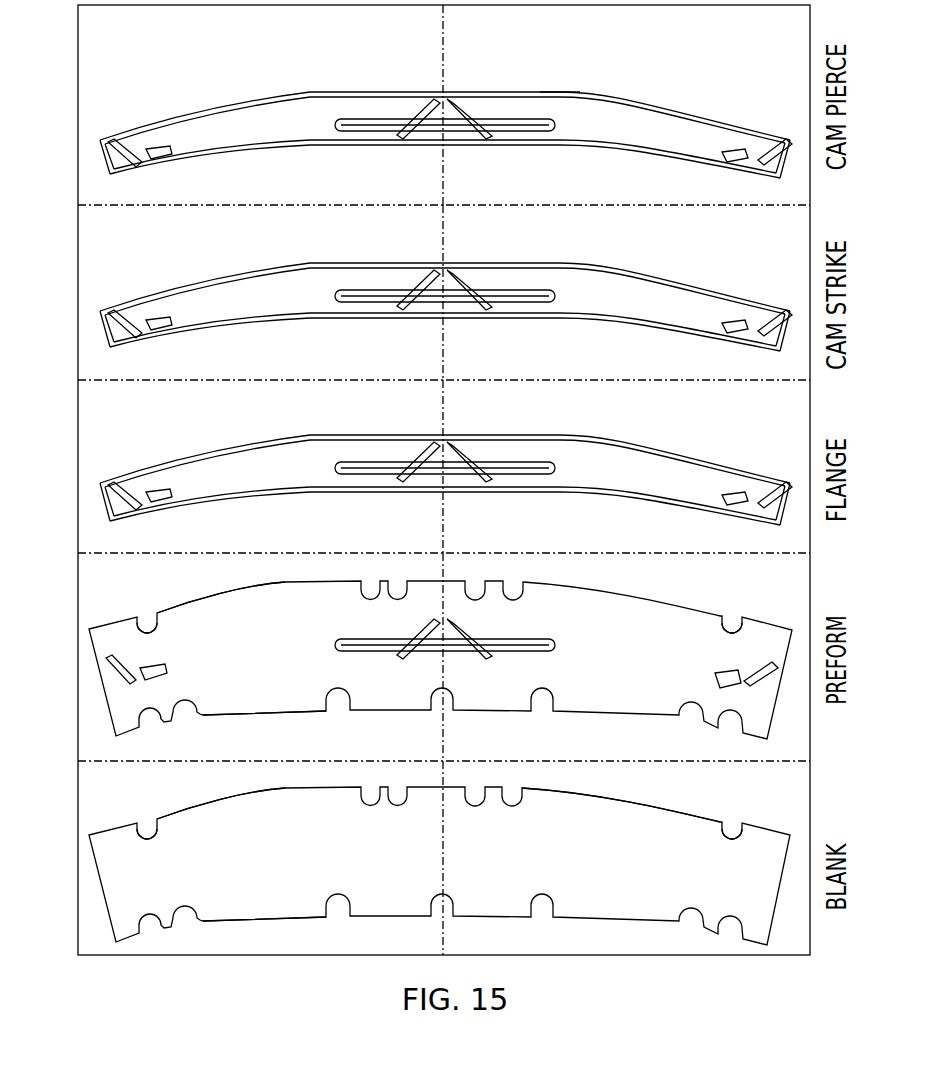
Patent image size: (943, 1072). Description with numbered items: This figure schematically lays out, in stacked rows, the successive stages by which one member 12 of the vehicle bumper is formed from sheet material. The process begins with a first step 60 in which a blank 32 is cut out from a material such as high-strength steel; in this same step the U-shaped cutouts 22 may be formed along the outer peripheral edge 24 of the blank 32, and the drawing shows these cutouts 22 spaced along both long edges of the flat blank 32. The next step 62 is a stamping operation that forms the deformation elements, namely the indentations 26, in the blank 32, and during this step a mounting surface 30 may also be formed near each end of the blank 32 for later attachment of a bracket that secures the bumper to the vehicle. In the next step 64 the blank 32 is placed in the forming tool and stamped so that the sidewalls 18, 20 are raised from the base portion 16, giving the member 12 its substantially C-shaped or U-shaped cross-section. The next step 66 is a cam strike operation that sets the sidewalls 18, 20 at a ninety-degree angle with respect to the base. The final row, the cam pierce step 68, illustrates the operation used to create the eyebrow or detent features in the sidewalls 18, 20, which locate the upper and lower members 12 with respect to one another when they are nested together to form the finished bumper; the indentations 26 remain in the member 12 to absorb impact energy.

The member 12 is at (445, 285).
The base portion 16 is at (638, 114).
The sidewall 18 is at (603, 150).
The sidewall 20 is at (588, 92).
The U-shaped cutouts 22 is at (148, 626).
The outer peripheral edge 24 is at (236, 598).
The indentations 26 is at (112, 135).
The mounting surface 30 is at (170, 160).
The blank 32 is at (258, 695).
The first step 60 is at (72, 886).
The next step 62 is at (72, 698).
The next step 64 is at (72, 517).
The next step 66 is at (72, 322).
The cam pierce stage 68 is at (72, 130).